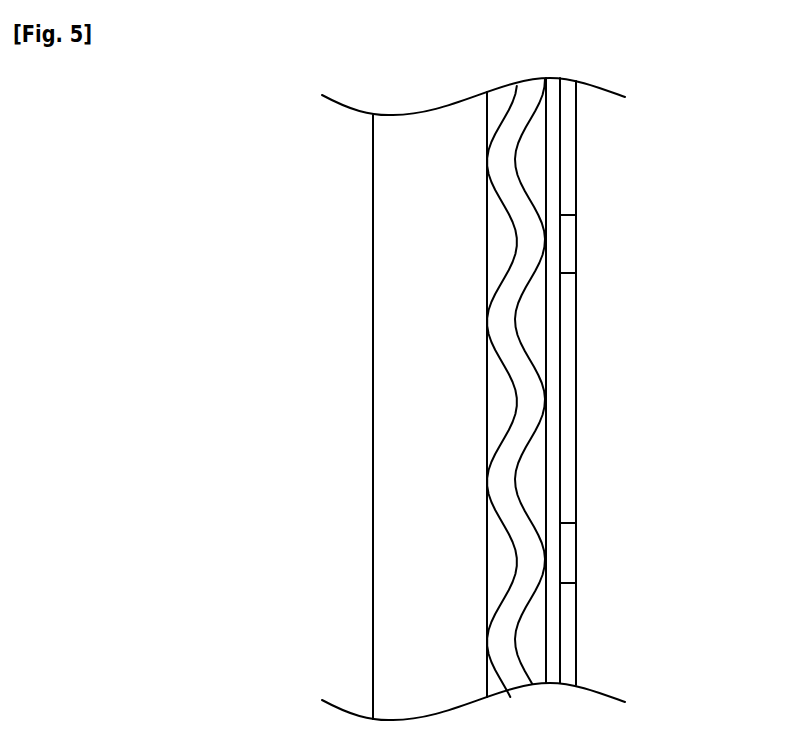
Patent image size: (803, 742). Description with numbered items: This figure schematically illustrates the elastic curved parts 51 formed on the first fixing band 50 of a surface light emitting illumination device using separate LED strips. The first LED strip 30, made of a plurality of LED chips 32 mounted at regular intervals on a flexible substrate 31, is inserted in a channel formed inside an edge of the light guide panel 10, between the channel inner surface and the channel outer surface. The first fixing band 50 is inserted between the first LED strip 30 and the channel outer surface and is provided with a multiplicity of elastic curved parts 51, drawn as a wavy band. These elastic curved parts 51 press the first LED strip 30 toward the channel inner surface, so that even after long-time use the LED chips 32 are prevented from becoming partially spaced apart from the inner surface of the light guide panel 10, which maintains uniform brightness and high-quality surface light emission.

The light guide panel 10 is at (660, 415).
The first LED strip 30 is at (624, 380).
The flexible substrate 31 is at (552, 178).
The LED chips 32 is at (660, 165).
The first fixing band 50 is at (426, 388).
The elastic curved parts 51 is at (547, 243).